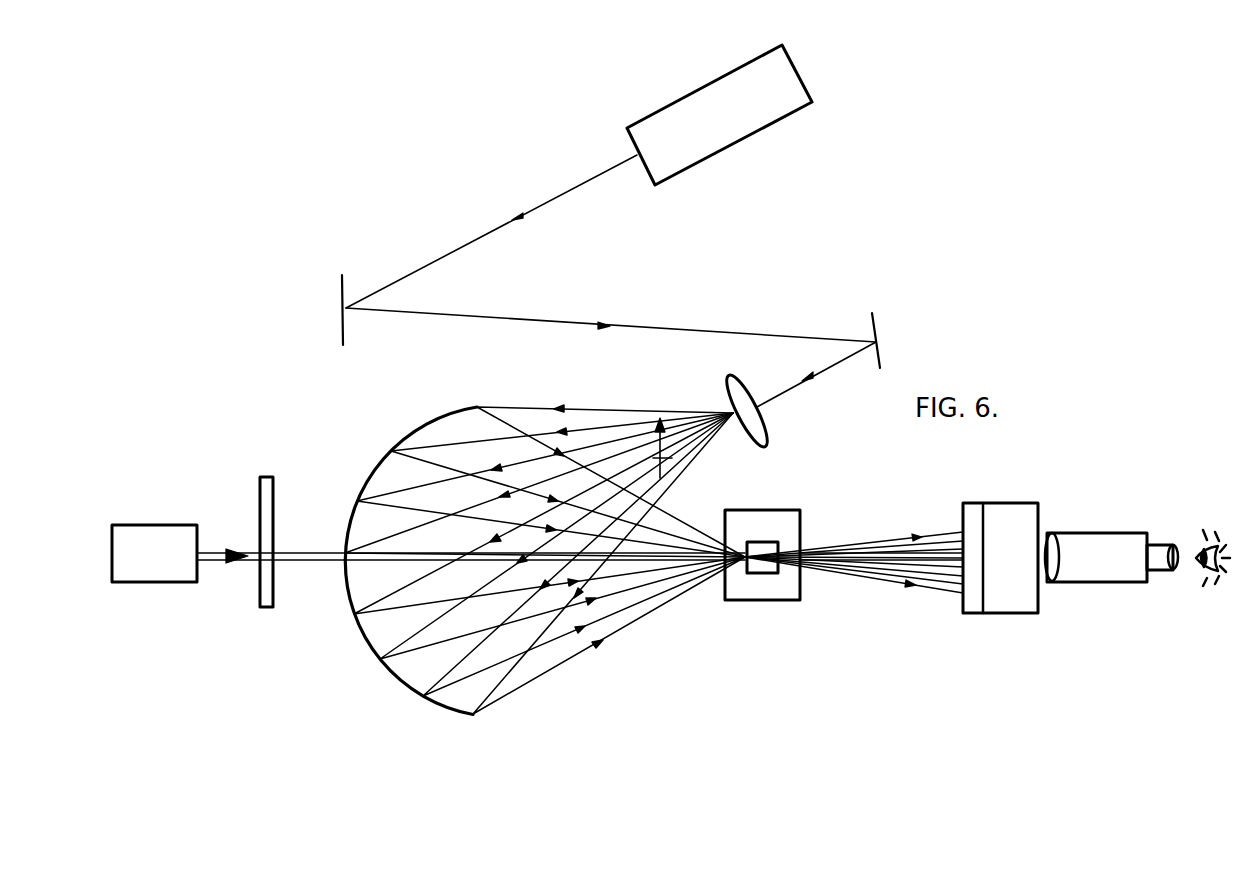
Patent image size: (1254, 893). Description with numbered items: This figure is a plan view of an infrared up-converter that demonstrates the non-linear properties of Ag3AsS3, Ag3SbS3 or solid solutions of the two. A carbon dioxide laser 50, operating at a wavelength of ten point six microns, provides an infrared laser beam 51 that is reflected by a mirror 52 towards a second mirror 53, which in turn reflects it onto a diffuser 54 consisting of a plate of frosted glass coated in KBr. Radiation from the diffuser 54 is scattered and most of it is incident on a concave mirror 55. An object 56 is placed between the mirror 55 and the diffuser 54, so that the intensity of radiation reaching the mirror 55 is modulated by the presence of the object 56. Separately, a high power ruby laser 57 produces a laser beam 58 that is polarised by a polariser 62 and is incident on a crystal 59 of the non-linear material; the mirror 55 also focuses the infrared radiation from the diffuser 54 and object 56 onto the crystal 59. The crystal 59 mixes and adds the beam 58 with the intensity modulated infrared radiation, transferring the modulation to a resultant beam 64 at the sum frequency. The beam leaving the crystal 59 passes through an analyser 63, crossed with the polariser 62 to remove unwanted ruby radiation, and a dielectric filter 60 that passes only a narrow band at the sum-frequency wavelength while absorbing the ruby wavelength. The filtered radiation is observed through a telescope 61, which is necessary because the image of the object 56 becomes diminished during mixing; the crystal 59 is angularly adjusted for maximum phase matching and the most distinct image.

The carbon dioxide laser 50 is at (783, 120).
The infrared laser beam 51 is at (557, 200).
The mirror 52 is at (338, 303).
The mirror 53 is at (878, 325).
The diffuser 54 is at (757, 430).
The concave mirror 55 is at (408, 435).
The object 56 is at (672, 458).
The ruby laser 57 is at (177, 583).
The laser beam 58 is at (207, 562).
The crystal 59 is at (760, 573).
The dielectric filter 60 is at (1020, 607).
The telescope 61 is at (1123, 585).
The polariser 62 is at (275, 608).
The analyser 63 is at (972, 613).
The resultant beam 64 is at (873, 580).